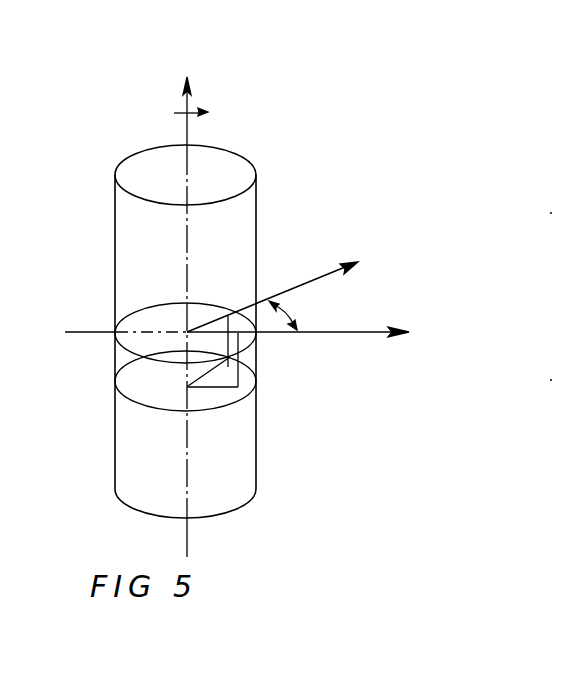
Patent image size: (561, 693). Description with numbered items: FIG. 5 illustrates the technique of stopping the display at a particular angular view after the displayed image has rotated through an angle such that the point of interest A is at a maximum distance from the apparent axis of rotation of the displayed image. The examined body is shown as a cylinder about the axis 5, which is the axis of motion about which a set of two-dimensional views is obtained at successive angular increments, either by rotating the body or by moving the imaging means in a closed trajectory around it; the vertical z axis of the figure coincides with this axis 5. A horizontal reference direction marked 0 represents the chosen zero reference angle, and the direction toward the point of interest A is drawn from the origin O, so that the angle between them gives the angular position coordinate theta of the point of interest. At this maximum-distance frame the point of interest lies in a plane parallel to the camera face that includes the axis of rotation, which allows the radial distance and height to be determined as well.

The axis 5 is at (192, 131).
The z axis of rotation z is at (190, 96).
The 0 degree reference axis 0 is at (250, 333).
The point of interest A is at (268, 302).
The origin / projection point O is at (200, 356).